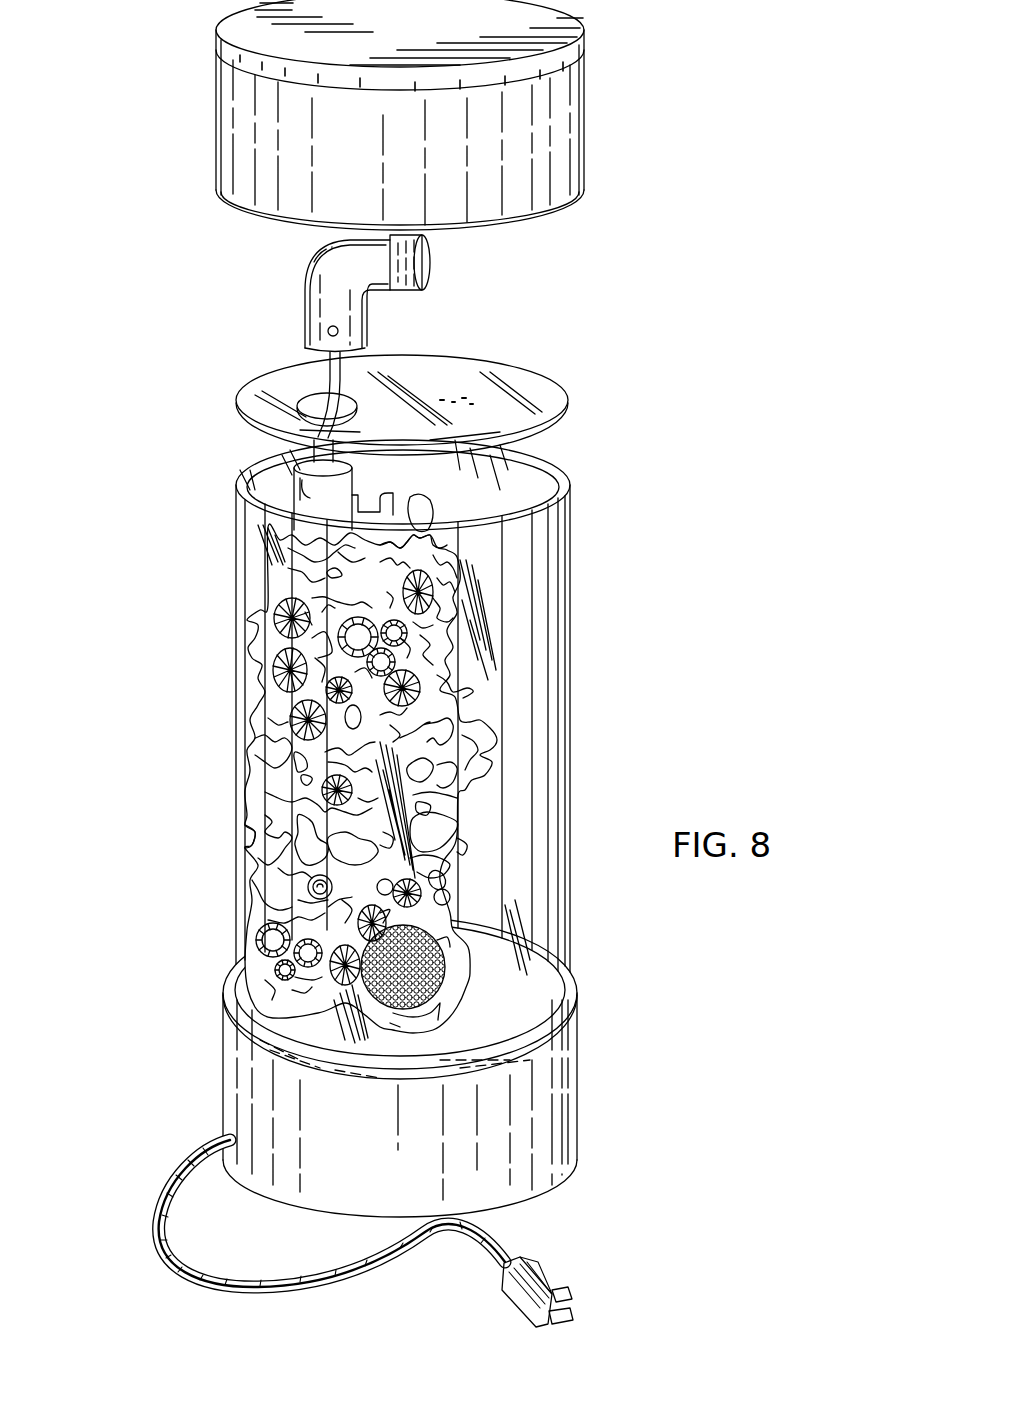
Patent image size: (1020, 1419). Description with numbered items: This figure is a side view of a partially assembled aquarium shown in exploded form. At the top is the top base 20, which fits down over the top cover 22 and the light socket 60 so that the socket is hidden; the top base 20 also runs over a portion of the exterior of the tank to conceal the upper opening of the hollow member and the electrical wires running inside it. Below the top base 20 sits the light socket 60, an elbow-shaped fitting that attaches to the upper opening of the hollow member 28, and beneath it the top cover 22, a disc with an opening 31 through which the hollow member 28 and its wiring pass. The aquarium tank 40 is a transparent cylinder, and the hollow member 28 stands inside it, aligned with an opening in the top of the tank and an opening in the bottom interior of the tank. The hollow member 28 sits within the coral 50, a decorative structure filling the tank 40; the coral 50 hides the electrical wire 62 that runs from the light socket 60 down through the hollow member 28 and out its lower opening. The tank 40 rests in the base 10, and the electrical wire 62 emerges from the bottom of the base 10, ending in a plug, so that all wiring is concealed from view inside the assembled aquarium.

The base 10 is at (557, 1100).
The top base 20 is at (548, 128).
The top cover 22 is at (540, 398).
The hollow member 28 is at (287, 502).
The opening 31 is at (260, 378).
The aquarium tank 40 is at (572, 660).
The coral 50 is at (460, 755).
The light socket 60 is at (393, 295).
The electrical wire 62 is at (210, 1150).